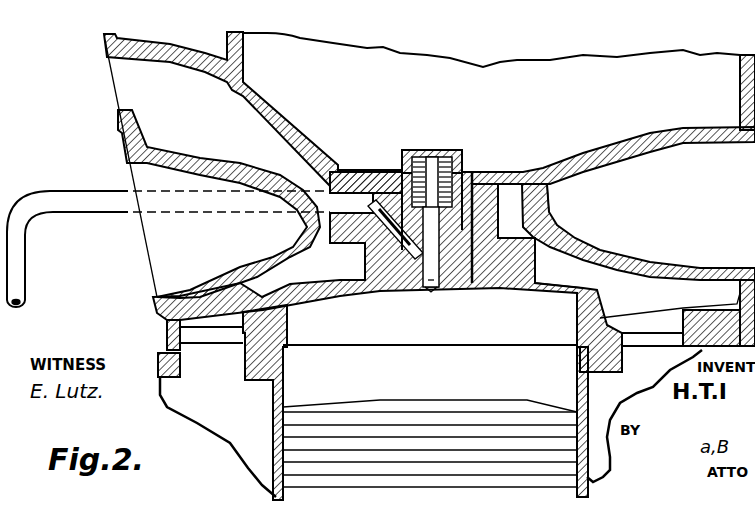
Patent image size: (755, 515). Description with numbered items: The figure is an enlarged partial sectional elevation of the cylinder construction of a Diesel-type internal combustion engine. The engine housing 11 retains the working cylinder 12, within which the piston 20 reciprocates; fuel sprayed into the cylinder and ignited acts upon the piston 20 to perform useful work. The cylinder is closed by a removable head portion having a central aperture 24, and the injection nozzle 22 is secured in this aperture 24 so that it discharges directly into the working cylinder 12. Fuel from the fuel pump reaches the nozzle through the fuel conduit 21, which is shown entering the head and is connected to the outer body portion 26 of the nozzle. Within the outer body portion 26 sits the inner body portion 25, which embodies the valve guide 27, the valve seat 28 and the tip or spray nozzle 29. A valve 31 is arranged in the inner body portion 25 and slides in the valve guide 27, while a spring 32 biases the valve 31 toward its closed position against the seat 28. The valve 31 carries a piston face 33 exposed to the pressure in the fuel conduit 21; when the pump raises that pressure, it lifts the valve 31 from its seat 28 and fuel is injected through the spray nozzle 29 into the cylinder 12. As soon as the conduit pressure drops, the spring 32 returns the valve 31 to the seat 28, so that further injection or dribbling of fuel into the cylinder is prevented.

The housing 11 is at (655, 392).
The working cylinder 12 is at (608, 457).
The piston 20 is at (374, 402).
The fuel conduit 21 is at (50, 190).
The injection nozzle 22 is at (523, 173).
The central aperture 24 is at (500, 270).
The inner body portion 25 is at (498, 238).
The outer body portion 26 is at (545, 240).
The valve guide 27 is at (366, 190).
The valve seat 28 is at (419, 288).
The tip or spray nozzle 29 is at (433, 293).
The valve 31 is at (473, 173).
The spring 32 is at (408, 150).
The piston face 33 is at (493, 257).